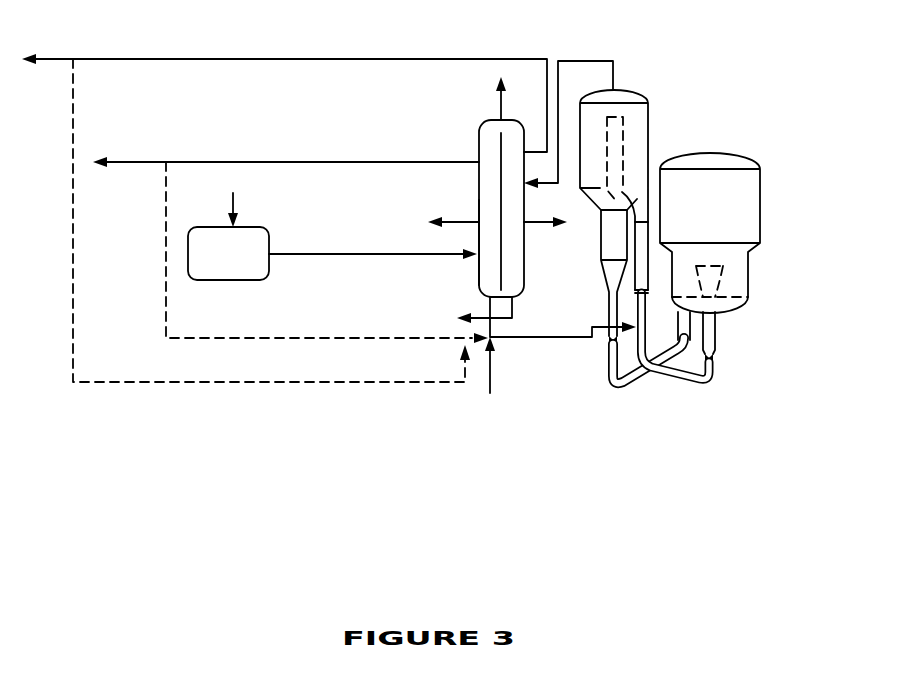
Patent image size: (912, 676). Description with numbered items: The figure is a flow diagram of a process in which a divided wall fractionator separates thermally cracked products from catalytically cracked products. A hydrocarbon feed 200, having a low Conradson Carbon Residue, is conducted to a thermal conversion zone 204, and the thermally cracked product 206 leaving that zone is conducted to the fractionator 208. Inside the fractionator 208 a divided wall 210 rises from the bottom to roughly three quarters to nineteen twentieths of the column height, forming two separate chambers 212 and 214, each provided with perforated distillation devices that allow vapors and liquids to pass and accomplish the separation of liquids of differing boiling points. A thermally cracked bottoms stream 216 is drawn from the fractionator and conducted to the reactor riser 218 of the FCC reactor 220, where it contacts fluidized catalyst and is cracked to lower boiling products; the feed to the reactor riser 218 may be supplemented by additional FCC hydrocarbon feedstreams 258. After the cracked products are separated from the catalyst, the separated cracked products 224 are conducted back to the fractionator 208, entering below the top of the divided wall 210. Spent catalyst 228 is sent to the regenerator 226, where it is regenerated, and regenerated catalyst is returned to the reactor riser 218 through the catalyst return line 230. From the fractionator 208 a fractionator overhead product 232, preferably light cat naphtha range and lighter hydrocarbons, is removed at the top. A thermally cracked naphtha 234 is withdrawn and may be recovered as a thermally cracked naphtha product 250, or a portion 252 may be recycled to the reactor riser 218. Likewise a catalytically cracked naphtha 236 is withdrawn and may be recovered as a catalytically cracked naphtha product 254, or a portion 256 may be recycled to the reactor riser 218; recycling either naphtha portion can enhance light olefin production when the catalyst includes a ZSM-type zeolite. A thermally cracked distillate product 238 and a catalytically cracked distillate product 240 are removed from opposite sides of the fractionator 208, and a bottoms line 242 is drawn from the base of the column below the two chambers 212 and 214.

The hydrocarbon feed 200 is at (231, 196).
The thermal conversion zone 204 is at (269, 265).
The thermally cracked product 206 is at (373, 245).
The fractionator 208 is at (477, 128).
The divided wall 210 is at (505, 268).
The separate chamber 212 is at (490, 272).
The separate chamber 214 is at (512, 285).
The thermally cracked bottoms stream 216 is at (563, 340).
The reactor riser 218 is at (648, 315).
The FCC reactor 220 is at (648, 130).
The separated cracked products 224 is at (570, 113).
The regenerator 226 is at (760, 203).
The spent catalyst 228 is at (609, 357).
The catalyst return line 230 is at (716, 372).
The fractionator overhead product 232 is at (484, 98).
The thermally cracked naphtha 234 is at (293, 151).
The catalytically cracked naphtha 236 is at (291, 94).
The thermally cracked distillate product 238 is at (453, 211).
The catalytically cracked distillate product 240 is at (546, 211).
The bottom product line 242 is at (450, 323).
The thermally cracked naphtha product 250 is at (146, 151).
The recycled portion of thermally cracked naphtha 252 is at (327, 252).
The catalytically cracked naphtha product 254 is at (71, 46).
The recycled portion of catalytically cracked naphtha 256 is at (271, 220).
The additional FCC hydrocarbon feedstreams 258 is at (489, 377).